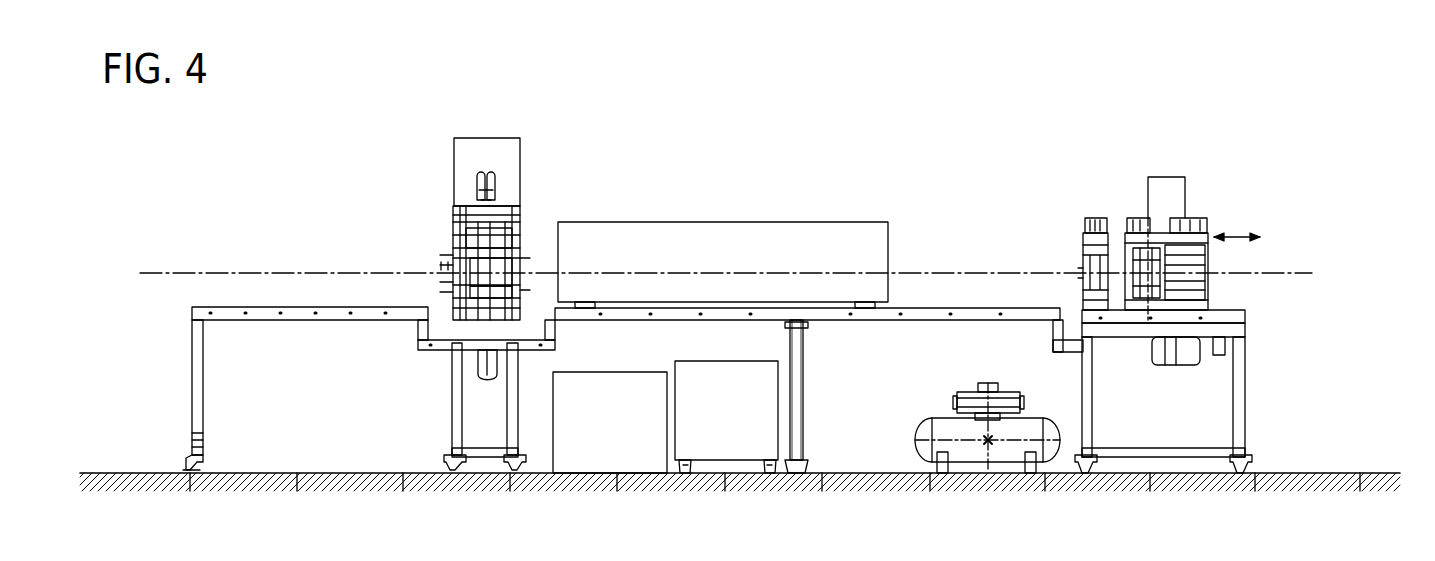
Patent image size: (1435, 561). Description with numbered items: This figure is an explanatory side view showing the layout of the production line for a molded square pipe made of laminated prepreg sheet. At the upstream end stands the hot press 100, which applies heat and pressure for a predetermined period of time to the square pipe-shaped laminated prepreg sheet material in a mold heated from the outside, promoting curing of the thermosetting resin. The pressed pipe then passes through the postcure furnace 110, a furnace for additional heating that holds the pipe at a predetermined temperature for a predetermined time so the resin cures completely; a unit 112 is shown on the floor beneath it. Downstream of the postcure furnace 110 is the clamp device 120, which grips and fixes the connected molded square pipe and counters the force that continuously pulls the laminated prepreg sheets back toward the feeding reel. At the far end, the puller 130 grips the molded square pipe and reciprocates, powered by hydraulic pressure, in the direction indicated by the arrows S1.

The hot press 100 is at (487, 138).
The postcure furnace 110 is at (714, 240).
The control box 112 is at (605, 465).
The clamp device 120 is at (1088, 218).
The puller 130 is at (1196, 205).
The moving direction S1 is at (1255, 239).